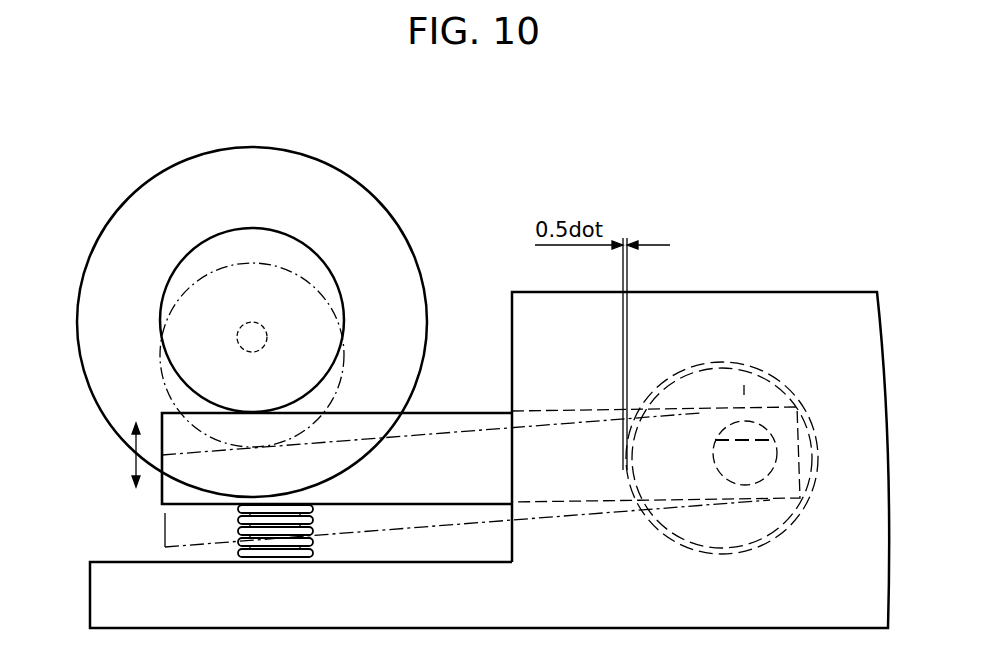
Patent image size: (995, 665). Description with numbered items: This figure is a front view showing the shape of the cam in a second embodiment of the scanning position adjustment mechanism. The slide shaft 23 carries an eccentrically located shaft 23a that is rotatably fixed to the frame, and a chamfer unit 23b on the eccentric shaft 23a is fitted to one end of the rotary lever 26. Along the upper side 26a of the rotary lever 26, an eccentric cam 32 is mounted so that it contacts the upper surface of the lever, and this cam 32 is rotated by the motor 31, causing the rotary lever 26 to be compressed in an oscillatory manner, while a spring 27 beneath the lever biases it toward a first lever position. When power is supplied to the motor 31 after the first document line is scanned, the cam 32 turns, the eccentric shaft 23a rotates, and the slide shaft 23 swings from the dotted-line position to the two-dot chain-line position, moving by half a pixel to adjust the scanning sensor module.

The motor 31 is at (367, 210).
The eccentric cam 32 is at (242, 245).
The rotary lever 26 is at (453, 432).
The upper side 26a is at (197, 413).
The spring 27 is at (240, 528).
The slide shaft 23 is at (727, 363).
The chamfer unit 23b is at (744, 385).
The eccentrically located shaft 23a is at (757, 427).